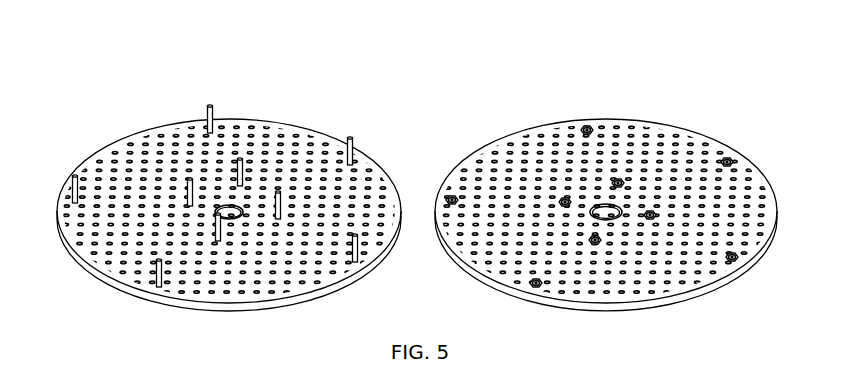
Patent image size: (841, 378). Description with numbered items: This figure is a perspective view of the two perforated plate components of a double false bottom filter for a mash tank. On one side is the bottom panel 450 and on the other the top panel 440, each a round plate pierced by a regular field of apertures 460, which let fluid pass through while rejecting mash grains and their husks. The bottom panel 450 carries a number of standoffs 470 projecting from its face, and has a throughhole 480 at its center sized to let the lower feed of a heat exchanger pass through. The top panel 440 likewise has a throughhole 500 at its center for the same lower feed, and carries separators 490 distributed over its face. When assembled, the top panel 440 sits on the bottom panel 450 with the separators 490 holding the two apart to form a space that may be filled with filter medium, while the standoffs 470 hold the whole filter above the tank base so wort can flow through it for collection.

The top panel 440 is at (677, 93).
The bottom panel 450 is at (270, 82).
The apertures 460 is at (330, 150).
The standoffs 470 is at (74, 178).
The throughhole 480 is at (229, 212).
The separators 490 is at (726, 154).
The throughhole 500 is at (604, 207).